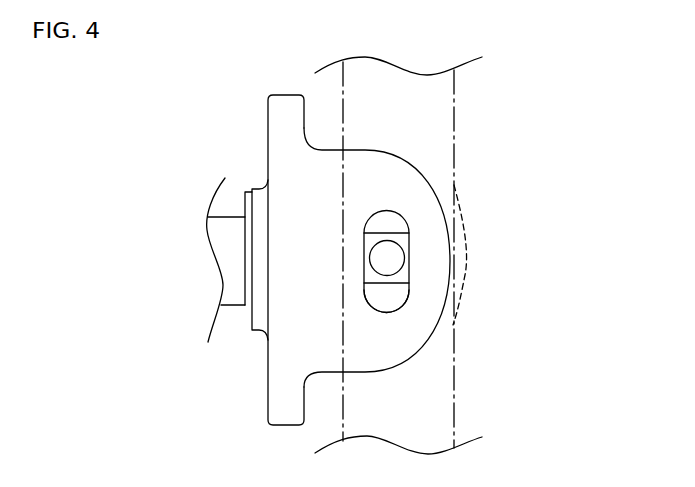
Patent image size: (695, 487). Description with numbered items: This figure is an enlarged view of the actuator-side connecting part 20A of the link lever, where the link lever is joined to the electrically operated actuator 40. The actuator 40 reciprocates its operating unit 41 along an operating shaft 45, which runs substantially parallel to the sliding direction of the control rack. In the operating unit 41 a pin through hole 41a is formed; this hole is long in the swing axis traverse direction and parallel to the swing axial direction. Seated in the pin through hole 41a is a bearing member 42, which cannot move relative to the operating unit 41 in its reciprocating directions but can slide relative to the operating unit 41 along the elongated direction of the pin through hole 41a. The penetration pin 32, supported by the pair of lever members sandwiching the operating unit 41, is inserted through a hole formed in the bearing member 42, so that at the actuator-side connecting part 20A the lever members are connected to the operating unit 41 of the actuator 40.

The electrically operated actuator 40 is at (440, 260).
The operating unit 41 is at (431, 181).
The pin through hole 41a is at (377, 302).
The bearing member 42 is at (402, 276).
The penetration pin 32 is at (391, 260).
The actuator-side connecting part 20A is at (473, 227).
The operating shaft 45 is at (235, 308).